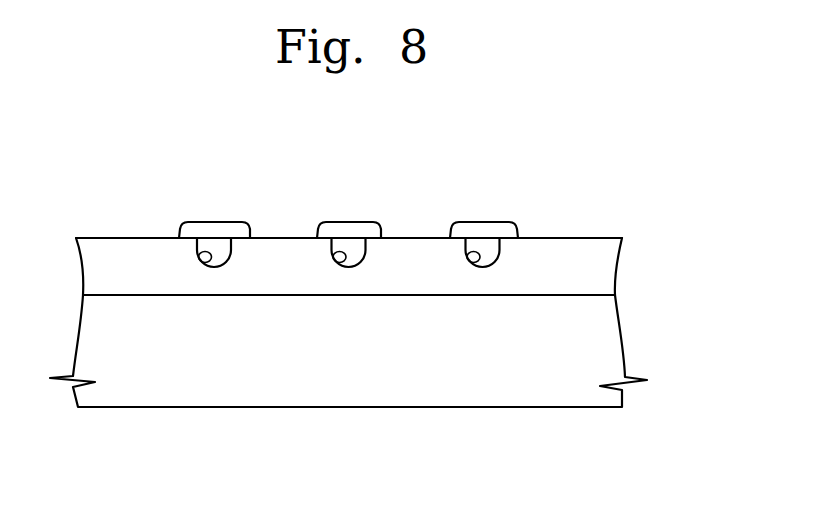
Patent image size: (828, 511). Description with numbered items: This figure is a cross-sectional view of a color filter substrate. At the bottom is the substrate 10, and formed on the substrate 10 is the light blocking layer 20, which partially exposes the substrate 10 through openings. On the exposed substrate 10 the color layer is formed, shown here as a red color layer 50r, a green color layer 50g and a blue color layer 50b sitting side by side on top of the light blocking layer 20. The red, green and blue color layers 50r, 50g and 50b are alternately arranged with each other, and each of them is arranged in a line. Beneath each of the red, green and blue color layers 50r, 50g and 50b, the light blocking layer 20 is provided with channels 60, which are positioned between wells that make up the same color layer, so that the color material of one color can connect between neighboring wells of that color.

The substrate 10 is at (610, 342).
The light blocking layer 20 is at (610, 269).
The red color layer 50r is at (221, 222).
The green color layer 50g is at (355, 222).
The blue color layer 50b is at (491, 222).
The channels 60 is at (212, 265).